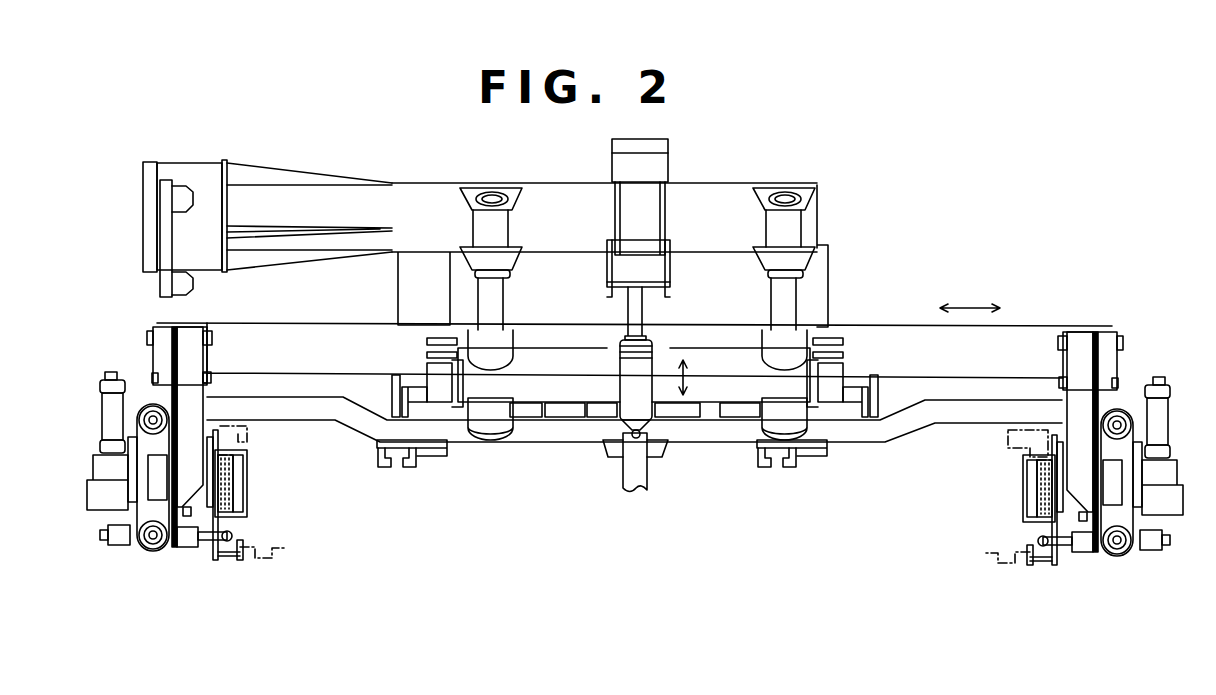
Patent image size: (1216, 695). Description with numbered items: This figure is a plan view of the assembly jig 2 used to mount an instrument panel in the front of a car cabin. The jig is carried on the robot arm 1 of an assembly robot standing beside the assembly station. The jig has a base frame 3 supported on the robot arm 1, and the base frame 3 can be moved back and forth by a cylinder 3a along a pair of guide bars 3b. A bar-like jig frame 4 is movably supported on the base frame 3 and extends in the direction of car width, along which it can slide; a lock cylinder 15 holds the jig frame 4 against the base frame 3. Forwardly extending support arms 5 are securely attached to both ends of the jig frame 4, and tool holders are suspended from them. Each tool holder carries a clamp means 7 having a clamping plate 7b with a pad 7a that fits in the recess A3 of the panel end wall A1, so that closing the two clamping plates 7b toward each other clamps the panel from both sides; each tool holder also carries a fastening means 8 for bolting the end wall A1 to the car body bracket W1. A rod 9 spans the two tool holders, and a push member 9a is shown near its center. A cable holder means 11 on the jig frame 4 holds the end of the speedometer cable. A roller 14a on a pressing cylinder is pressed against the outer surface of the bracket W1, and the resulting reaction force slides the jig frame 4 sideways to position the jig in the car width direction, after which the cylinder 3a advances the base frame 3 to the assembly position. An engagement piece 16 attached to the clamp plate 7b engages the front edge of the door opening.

The robot arm 1 is at (432, 190).
The assembly jig 2 is at (1051, 314).
The base frame 3 is at (703, 360).
The cylinder 3a is at (655, 205).
The guide bars 3b is at (500, 302).
The jig frame 4 is at (360, 330).
The support arms 5 is at (175, 372).
The clamp means 7 is at (205, 565).
The pad 7a is at (233, 468).
The clamping plate 7b is at (240, 498).
The fastening means 8 is at (91, 415).
The rod 9 is at (571, 433).
The push rod 9a is at (637, 470).
The cable holder means 11 is at (418, 480).
The roller 14a is at (232, 534).
The lock cylinder 15 is at (440, 395).
The engagement piece 16 is at (228, 557).
The end wall A1 is at (250, 425).
The recess A3 is at (236, 457).
The bracket W1 is at (272, 562).